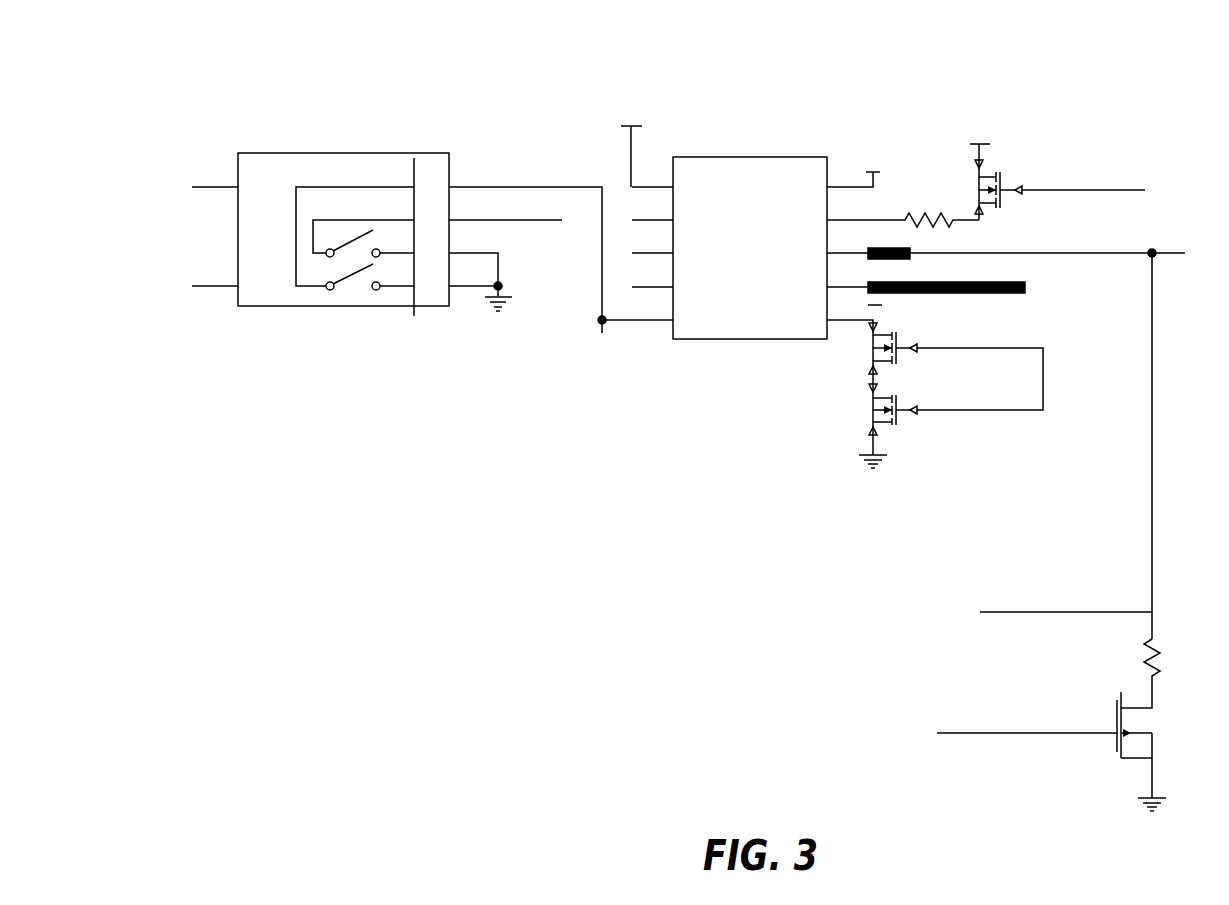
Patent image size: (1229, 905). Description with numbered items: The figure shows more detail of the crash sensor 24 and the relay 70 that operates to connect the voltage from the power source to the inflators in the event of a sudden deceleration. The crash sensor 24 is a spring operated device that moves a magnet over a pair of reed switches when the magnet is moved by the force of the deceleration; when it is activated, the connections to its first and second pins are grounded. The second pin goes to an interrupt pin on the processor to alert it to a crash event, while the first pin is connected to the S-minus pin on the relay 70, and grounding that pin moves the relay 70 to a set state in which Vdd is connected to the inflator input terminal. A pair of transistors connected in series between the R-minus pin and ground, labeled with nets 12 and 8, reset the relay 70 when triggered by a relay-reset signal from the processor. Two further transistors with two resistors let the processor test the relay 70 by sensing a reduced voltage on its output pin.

The relay 70 is at (505, 98).
The crash sensor 24 is at (378, 152).
The net between transistors Q7 and Q8 12 is at (866, 379).
The net from transistor Q8 to ground 8 is at (871, 445).